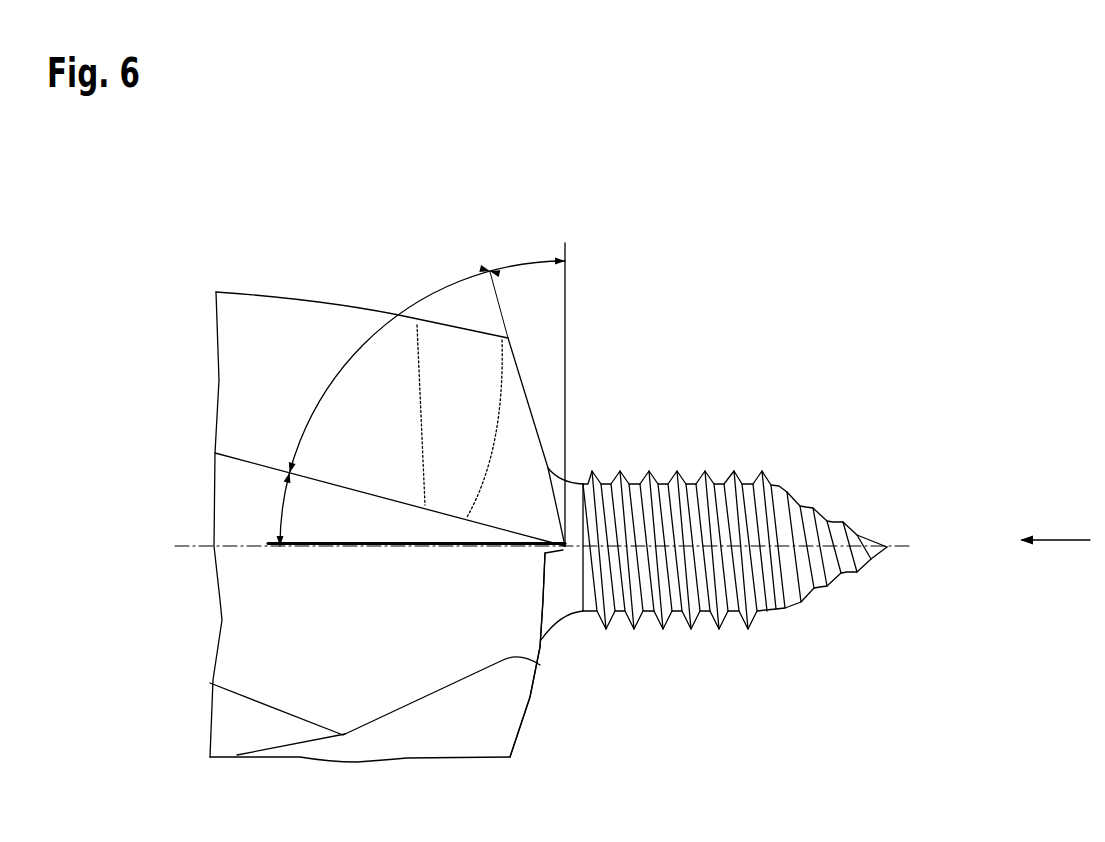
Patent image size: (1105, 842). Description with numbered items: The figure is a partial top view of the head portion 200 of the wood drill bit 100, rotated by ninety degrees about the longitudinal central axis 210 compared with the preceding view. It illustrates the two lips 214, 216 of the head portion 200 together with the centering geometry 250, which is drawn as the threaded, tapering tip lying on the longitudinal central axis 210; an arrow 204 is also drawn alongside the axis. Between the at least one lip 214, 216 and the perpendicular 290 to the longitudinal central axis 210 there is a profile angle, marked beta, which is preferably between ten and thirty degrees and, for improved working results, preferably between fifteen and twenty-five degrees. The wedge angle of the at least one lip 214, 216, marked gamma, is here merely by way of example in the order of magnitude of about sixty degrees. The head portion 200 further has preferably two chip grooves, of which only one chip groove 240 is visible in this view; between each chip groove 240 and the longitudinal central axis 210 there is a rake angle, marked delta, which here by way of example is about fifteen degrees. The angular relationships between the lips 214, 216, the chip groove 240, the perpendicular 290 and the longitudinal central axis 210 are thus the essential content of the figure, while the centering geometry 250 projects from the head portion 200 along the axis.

The wood drill bit 100 is at (616, 436).
The head portion 200 is at (240, 192).
The screwing-in direction 204 is at (1068, 540).
The longitudinal central axis 210 is at (910, 552).
The lip 214 is at (523, 367).
The lip 216 is at (527, 700).
The chip groove 240 is at (247, 635).
The centering geometry 250 is at (778, 488).
The perpendicular 290 is at (565, 283).